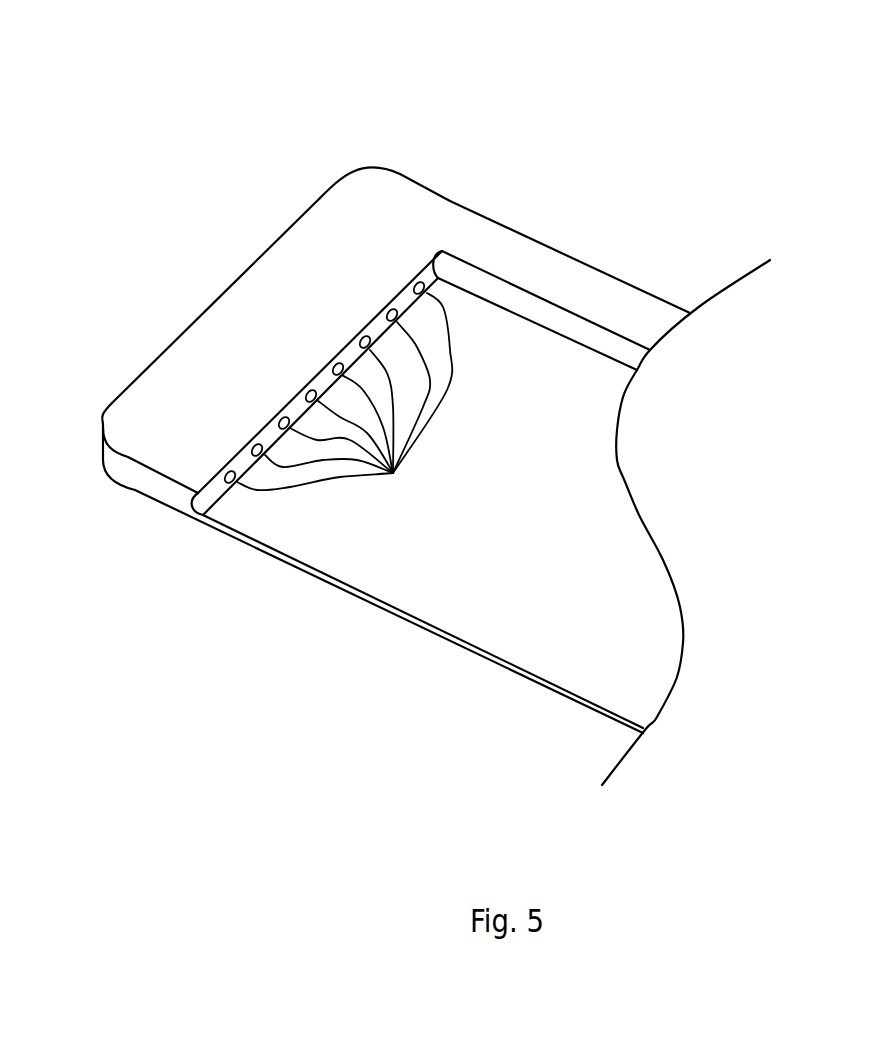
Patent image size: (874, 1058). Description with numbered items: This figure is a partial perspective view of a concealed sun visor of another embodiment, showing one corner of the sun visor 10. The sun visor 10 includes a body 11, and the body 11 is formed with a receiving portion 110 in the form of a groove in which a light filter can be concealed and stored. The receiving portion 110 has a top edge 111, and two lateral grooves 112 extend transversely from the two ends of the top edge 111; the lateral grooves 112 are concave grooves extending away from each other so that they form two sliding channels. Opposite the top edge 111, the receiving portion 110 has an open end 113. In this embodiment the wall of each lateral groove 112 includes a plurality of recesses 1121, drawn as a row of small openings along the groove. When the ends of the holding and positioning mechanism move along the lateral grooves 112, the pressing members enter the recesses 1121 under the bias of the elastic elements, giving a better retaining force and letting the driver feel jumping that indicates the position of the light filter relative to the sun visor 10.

The sun visor 10 is at (306, 158).
The body 11 is at (260, 293).
The receiving portion 110 is at (523, 360).
The top edge 111 is at (565, 327).
The lateral groove 112 is at (298, 410).
The recess 1121 is at (338, 394).
The open end 113 is at (430, 578).